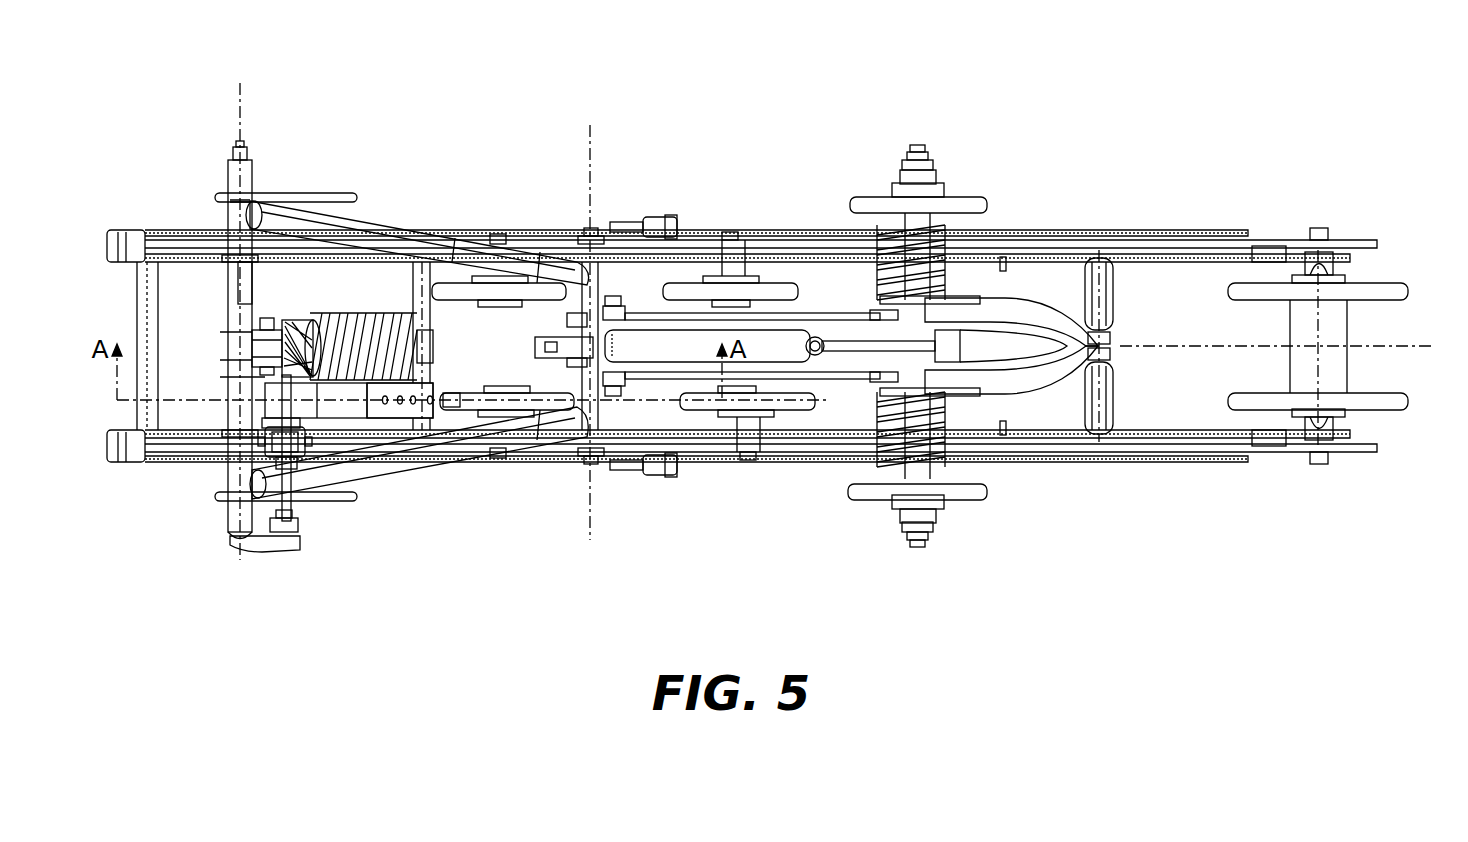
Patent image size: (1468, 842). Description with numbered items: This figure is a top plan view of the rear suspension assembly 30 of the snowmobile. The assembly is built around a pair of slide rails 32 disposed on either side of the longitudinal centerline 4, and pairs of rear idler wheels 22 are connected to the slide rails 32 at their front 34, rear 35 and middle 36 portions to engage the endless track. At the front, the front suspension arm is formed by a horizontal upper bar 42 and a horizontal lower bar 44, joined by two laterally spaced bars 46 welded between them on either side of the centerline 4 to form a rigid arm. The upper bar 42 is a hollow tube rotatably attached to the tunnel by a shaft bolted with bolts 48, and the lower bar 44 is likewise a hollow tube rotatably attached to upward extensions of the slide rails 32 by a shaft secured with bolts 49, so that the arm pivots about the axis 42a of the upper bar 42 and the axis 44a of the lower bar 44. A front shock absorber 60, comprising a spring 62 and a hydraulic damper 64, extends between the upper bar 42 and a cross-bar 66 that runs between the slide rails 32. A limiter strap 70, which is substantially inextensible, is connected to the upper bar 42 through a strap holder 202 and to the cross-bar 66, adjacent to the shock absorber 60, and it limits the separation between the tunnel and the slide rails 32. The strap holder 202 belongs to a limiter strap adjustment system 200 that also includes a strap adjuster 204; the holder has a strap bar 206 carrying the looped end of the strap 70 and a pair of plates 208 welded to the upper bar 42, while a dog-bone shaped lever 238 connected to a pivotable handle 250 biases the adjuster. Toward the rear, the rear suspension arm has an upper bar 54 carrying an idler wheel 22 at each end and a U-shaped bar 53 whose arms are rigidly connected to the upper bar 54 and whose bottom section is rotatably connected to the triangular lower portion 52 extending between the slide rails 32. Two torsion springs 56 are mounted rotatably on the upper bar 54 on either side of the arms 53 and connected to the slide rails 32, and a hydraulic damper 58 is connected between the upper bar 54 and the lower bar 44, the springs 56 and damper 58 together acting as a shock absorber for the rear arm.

The longitudinal centerline 4 is at (1393, 347).
The rear idler wheels 22 is at (690, 283).
The rear suspension assembly 30 is at (292, 47).
The slide rails 32 is at (1220, 230).
The front portion 34 is at (488, 222).
The rear portion 35 is at (1291, 210).
The middle portion 36 is at (763, 212).
The upper bar 42 is at (230, 172).
The axis of the upper bar 42a is at (238, 97).
The lower bar 44 is at (593, 260).
The axis of the lower bar 44a is at (592, 136).
The laterally spaced bars 46 is at (465, 247).
The bolts 48 is at (242, 148).
The bolts 49 is at (583, 240).
The lower portion 52 is at (1093, 267).
The U-shaped bar 53 is at (1005, 320).
The upper bar 54 is at (915, 220).
The torsion springs 56 is at (885, 240).
The hydraulic damper 58 is at (782, 353).
The front shock absorber 60 is at (296, 264).
The spring 62 is at (400, 315).
The hydraulic damper 64 is at (357, 327).
The cross-bar 66 is at (412, 280).
The limiter strap 70 is at (407, 413).
The limiter strap adjustment system 200 is at (316, 426).
The strap holder 202 is at (255, 403).
The strap adjuster 204 is at (296, 524).
The strap bar 206 is at (252, 340).
The plates 208 is at (250, 370).
The lever 238 is at (292, 462).
The handle 250 is at (230, 536).